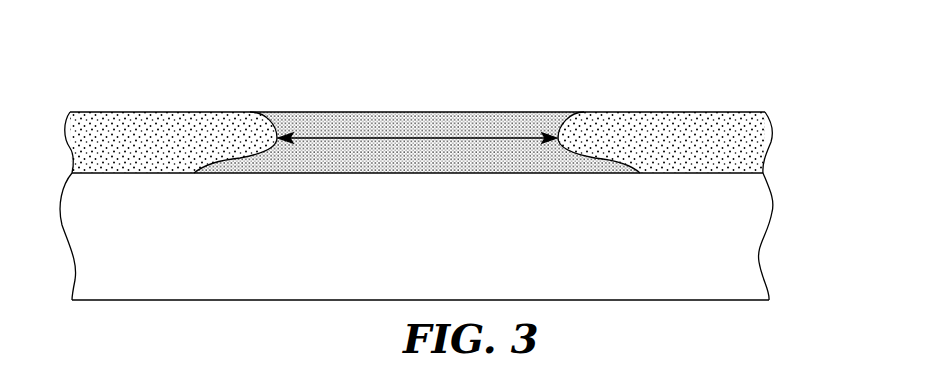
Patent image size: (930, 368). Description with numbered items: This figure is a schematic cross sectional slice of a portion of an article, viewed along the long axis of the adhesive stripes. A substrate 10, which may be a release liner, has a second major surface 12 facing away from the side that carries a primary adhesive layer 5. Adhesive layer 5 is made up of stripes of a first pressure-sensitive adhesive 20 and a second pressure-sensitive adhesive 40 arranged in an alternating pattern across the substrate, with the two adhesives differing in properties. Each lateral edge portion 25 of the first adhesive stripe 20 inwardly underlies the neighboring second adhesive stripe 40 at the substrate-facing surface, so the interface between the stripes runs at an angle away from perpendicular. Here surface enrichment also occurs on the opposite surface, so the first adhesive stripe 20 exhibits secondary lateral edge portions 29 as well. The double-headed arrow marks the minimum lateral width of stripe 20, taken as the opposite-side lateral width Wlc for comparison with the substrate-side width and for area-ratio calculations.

The primary adhesive layer 5 is at (776, 141).
The substrate 10 is at (442, 260).
The second major surface 12 is at (275, 300).
The first pressure-sensitive adhesive stripe 20 is at (421, 121).
The lateral edge portion 25 is at (220, 173).
The secondary lateral edge portion 29 is at (266, 112).
The second pressure-sensitive adhesive stripe 40 is at (163, 123).
The opposite-side lateral width Wlc is at (348, 137).